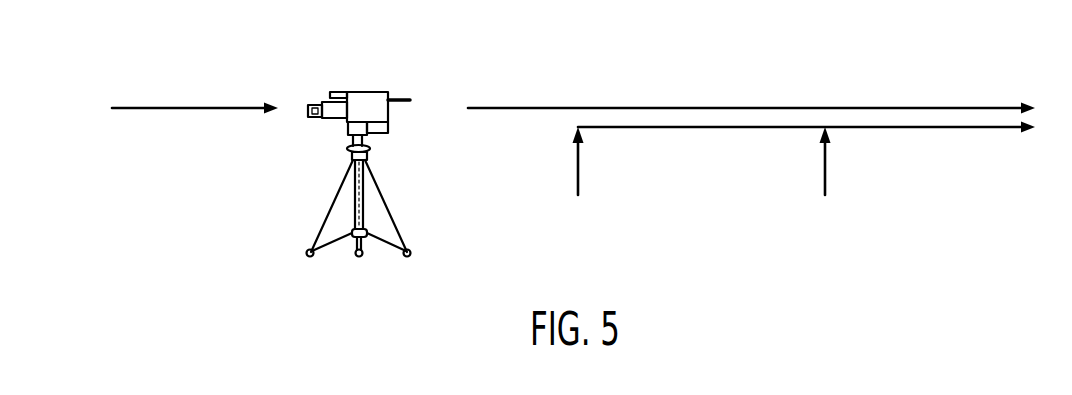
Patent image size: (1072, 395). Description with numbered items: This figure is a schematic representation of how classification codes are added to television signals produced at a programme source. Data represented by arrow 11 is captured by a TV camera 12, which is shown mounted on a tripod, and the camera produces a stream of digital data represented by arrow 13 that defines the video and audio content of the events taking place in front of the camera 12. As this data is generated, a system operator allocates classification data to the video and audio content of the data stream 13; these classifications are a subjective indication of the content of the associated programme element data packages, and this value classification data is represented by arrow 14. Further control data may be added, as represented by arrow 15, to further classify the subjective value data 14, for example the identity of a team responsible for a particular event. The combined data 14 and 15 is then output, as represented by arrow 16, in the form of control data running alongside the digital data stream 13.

The data 11 is at (195, 107).
The TV camera 12 is at (398, 131).
The stream of digital data 13 is at (527, 109).
The value classification data 14 is at (578, 167).
The control data 15 is at (825, 167).
The control data output 16 is at (903, 128).